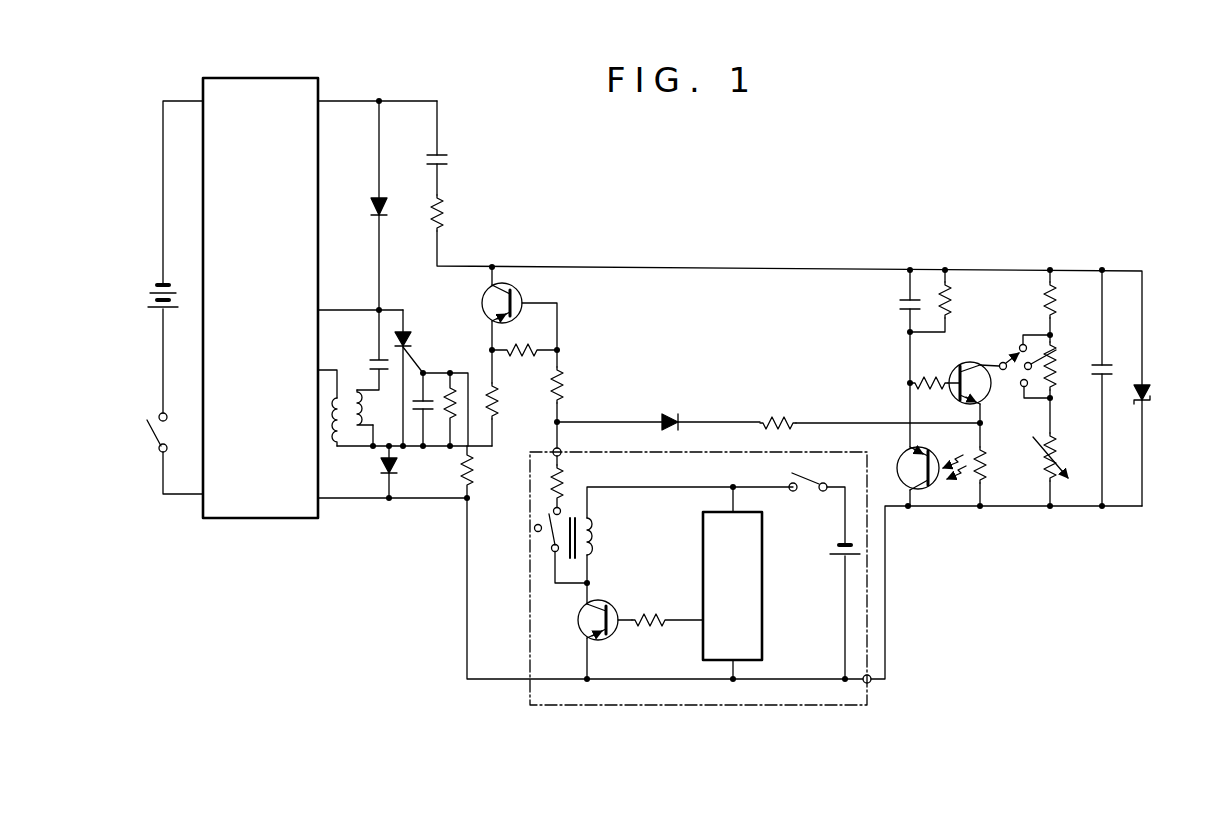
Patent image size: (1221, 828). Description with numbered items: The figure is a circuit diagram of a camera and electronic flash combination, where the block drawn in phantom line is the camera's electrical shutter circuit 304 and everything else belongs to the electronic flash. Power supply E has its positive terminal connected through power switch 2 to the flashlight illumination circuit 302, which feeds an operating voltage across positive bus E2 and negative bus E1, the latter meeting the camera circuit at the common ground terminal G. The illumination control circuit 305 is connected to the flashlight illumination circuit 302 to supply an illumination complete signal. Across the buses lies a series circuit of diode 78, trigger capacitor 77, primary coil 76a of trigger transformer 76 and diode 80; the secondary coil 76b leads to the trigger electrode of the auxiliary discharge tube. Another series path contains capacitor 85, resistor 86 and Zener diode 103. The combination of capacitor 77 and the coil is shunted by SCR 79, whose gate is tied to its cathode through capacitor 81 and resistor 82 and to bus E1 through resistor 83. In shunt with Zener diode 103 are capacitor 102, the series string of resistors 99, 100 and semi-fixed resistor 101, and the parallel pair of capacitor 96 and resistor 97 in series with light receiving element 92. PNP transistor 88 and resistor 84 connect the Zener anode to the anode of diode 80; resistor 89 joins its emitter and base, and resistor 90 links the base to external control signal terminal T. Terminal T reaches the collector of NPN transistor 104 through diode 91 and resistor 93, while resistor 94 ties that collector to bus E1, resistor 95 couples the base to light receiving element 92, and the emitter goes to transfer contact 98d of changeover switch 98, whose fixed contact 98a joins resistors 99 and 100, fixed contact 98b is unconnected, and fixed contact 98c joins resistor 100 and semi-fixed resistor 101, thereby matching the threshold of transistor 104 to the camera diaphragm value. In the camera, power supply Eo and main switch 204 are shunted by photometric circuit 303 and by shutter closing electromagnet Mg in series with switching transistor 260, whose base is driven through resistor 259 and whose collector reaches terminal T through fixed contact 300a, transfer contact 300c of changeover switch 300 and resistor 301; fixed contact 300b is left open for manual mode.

The flashlight illumination circuit 302 is at (263, 90).
The power supply E is at (152, 294).
The power switch 2 is at (148, 426).
The positive bus E2 is at (404, 100).
The capacitor 85 is at (447, 159).
The resistor 86 is at (446, 212).
The diode 78 is at (371, 209).
The SCR 79 is at (406, 339).
The trigger capacitor 77 is at (373, 362).
The trigger transformer 76 is at (351, 392).
The primary coil 76a is at (383, 409).
The secondary coil 76b is at (336, 441).
The diode 80 is at (384, 471).
The capacitor 81 is at (428, 412).
The resistor 82 is at (456, 388).
The resistor 83 is at (461, 472).
The resistor 84 is at (498, 399).
The PNP transistor 88 is at (487, 305).
The resistor 89 is at (520, 349).
The resistor 90 is at (562, 386).
The diode 91 is at (666, 414).
The resistor 93 is at (771, 418).
The illumination control circuit 305 is at (799, 243).
The external control signal terminal T is at (562, 451).
The resistor 301 is at (563, 478).
The negative bus E1 is at (406, 498).
The fixed contact 300a is at (553, 510).
The fixed contact 300b is at (534, 528).
The changeover switch 300 is at (550, 531).
The transfer contact 300c is at (551, 550).
The shutter closing electromagnet Mg is at (594, 548).
The switching transistor 260 is at (580, 627).
The resistor 259 is at (637, 617).
The photometric circuit 303 is at (762, 650).
The main switch 204 is at (815, 482).
The power supply Eo is at (840, 547).
The common ground terminal G is at (870, 684).
The electrical circuit 304 is at (664, 707).
The capacitor 96 is at (898, 305).
The resistor 97 is at (950, 302).
The resistor 95 is at (929, 397).
The NPN transistor 104 is at (958, 369).
The light receiving element 92 is at (903, 455).
The resistor 94 is at (986, 461).
The resistor 99 is at (1044, 299).
The changeover switch 98 is at (1000, 362).
The fixed contact 98a is at (1022, 344).
The fixed contact 98b is at (1060, 350).
The fixed contact 98c is at (1052, 409).
The transfer contact 98d is at (1022, 387).
The resistor 100 is at (1043, 376).
The semi-fixed resistor 101 is at (1040, 466).
The capacitor 102 is at (1104, 365).
The Zener diode 103 is at (1151, 397).